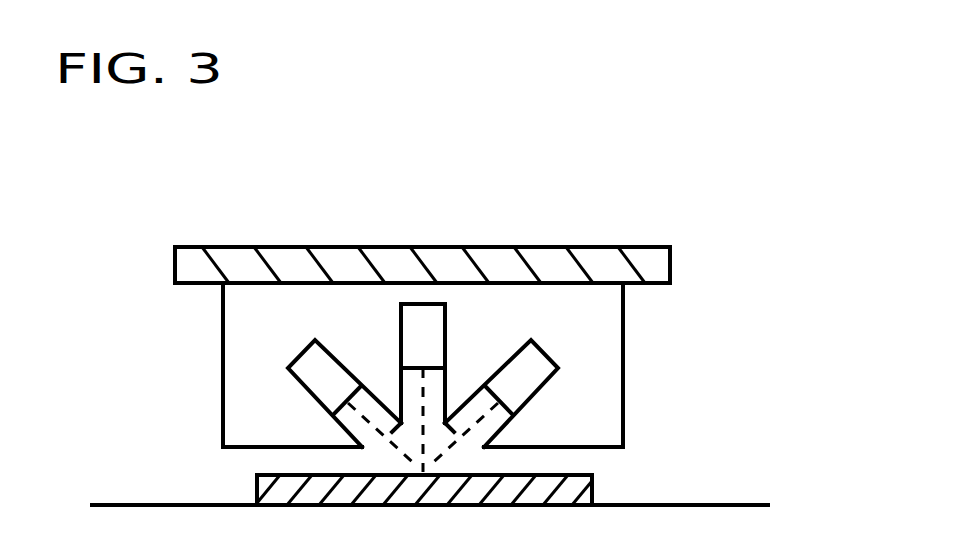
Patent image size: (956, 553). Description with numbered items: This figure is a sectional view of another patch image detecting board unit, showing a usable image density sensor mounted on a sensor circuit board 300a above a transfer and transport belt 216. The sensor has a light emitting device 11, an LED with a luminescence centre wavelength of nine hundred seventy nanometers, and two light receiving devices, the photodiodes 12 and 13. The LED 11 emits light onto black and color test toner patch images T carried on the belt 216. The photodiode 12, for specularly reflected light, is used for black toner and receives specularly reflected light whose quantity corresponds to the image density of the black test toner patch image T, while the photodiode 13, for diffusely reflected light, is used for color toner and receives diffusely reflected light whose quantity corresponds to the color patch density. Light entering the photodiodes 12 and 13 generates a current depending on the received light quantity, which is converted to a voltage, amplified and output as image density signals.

The sensor circuit board 300a is at (436, 220).
The light receiving device 13 is at (414, 304).
The light receiving device 12 is at (288, 368).
The light emitting device 11 is at (558, 368).
The test toner patch image T is at (257, 490).
The transfer and transport belt 216 is at (667, 503).